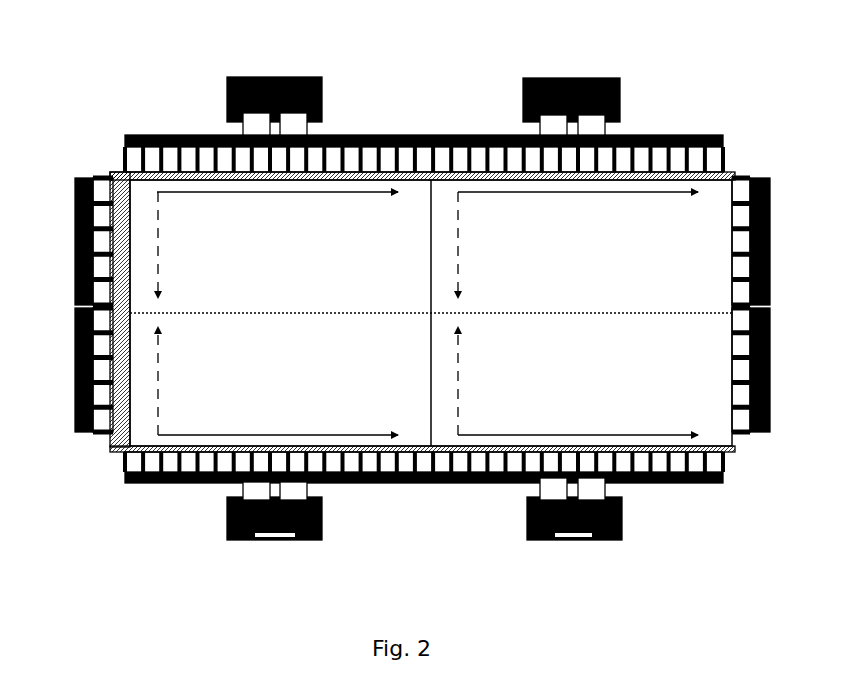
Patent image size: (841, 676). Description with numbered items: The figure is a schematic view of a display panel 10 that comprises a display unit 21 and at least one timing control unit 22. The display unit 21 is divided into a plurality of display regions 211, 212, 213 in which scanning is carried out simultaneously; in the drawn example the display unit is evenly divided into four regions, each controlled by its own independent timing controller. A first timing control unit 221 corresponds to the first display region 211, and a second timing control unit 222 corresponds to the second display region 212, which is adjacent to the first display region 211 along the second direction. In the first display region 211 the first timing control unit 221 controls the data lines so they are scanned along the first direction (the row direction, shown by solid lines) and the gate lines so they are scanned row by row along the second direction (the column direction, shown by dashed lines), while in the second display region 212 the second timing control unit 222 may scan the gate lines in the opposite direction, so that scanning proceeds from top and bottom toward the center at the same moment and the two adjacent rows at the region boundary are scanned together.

The display panel 10 is at (812, 50).
The display unit 21 is at (115, 170).
The first display region 211 is at (148, 242).
The second display region 212 is at (148, 362).
The display region 213 is at (703, 405).
The timing control unit 22 is at (625, 50).
The first timing control unit 221 is at (300, 77).
The second timing control unit 222 is at (302, 540).